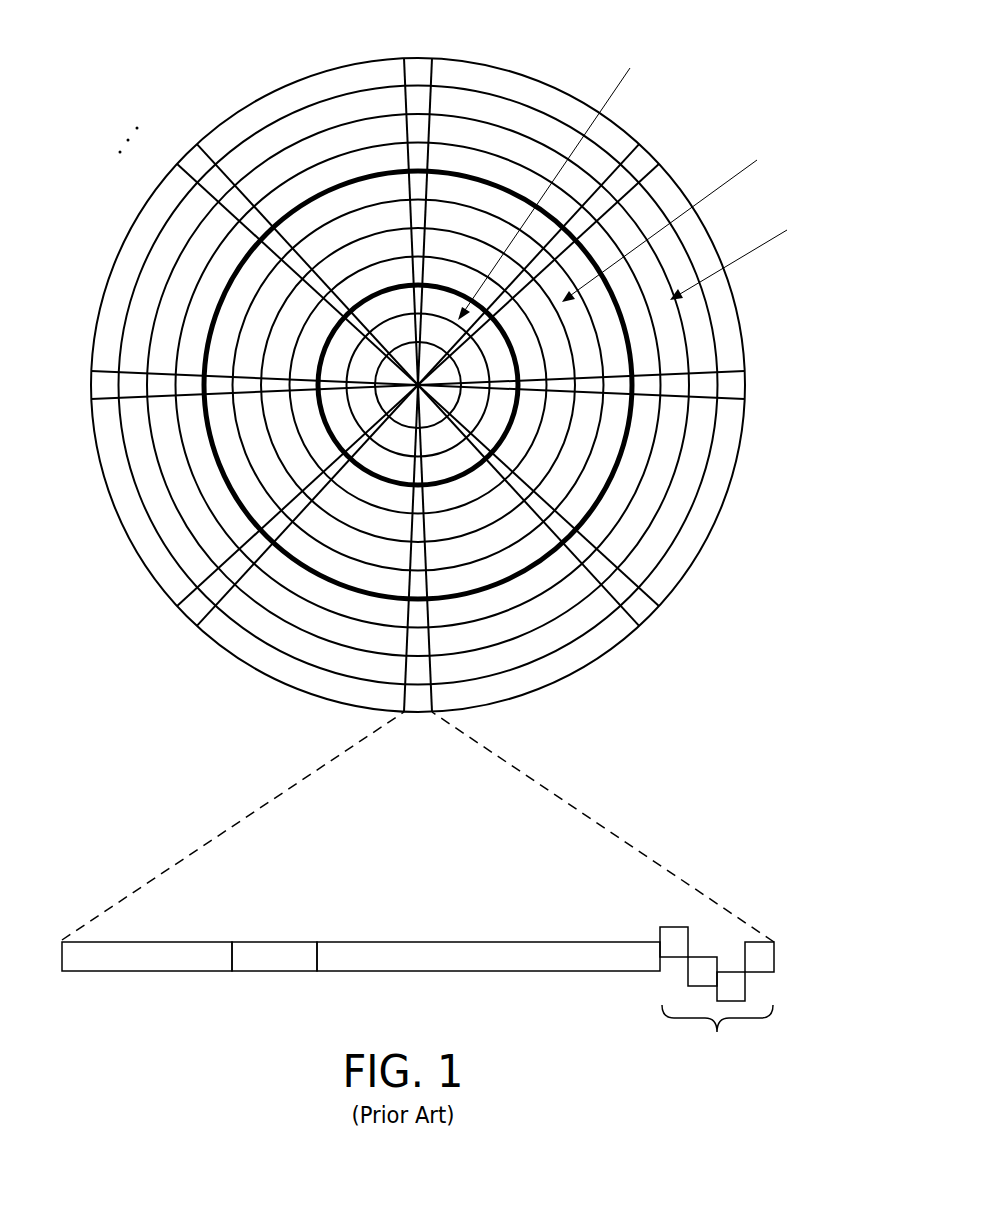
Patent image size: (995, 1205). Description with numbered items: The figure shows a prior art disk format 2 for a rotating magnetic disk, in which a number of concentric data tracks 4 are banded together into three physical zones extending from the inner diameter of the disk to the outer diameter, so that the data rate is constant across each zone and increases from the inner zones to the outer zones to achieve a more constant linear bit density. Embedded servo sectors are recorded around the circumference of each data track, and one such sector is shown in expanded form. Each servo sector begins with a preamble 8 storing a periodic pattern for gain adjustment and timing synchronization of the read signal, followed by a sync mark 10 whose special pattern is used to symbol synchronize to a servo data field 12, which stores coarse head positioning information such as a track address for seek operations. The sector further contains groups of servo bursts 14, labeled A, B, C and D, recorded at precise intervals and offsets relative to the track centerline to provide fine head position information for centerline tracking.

The disk format 2 is at (178, 63).
The data tracks 4 is at (528, 125).
The preamble 8 is at (127, 971).
The sync mark 10 is at (271, 971).
The servo data field 12 is at (477, 965).
The servo bursts 14 is at (650, 910).